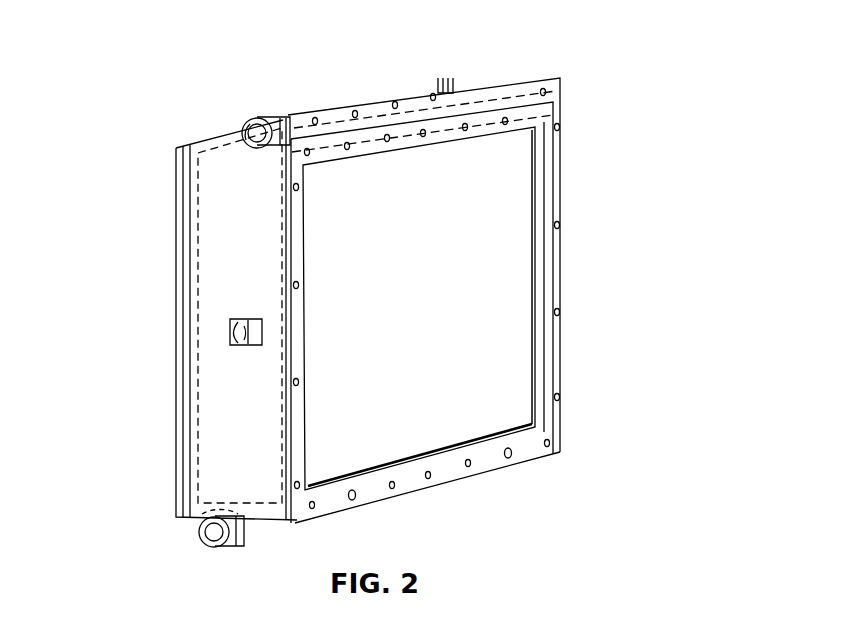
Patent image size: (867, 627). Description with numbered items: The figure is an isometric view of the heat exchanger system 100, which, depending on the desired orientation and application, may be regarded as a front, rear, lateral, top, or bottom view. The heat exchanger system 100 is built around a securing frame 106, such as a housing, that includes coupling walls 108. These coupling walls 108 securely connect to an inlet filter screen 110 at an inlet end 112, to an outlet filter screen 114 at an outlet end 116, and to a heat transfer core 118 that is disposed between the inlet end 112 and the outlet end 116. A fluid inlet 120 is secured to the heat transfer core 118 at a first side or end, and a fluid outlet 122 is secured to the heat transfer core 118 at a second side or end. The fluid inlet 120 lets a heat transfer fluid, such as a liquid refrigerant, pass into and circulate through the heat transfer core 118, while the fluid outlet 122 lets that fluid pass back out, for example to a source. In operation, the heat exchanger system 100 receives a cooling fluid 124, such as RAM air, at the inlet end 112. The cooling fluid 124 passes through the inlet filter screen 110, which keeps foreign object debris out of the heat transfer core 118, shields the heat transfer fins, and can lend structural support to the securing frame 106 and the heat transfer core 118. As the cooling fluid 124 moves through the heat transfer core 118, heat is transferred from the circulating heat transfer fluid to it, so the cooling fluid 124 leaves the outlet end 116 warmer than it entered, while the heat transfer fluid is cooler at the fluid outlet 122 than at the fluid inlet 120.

The heat exchanger system 100 is at (585, 81).
The securing frame 106 is at (210, 385).
The coupling walls 108 is at (205, 455).
The inlet filter screen 110 is at (556, 246).
The inlet end 112 is at (500, 228).
The outlet filter screen 114 is at (175, 248).
The outlet end 116 is at (175, 222).
The heat transfer core 118 is at (418, 100).
The fluid inlet 120 is at (210, 535).
The fluid outlet 122 is at (243, 131).
The cooling fluid 124 is at (430, 300).